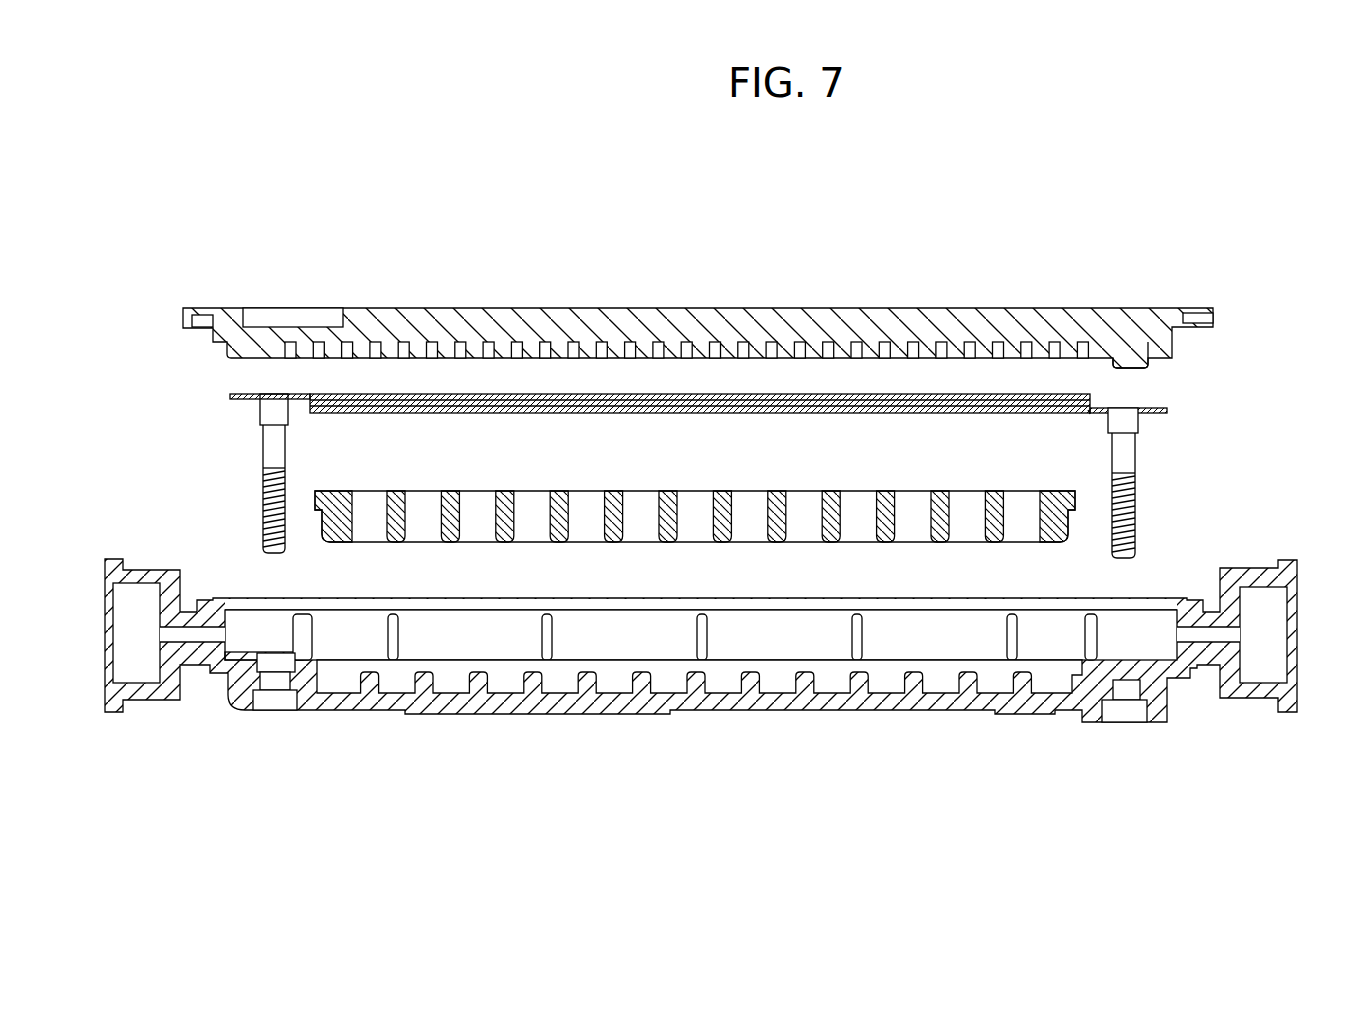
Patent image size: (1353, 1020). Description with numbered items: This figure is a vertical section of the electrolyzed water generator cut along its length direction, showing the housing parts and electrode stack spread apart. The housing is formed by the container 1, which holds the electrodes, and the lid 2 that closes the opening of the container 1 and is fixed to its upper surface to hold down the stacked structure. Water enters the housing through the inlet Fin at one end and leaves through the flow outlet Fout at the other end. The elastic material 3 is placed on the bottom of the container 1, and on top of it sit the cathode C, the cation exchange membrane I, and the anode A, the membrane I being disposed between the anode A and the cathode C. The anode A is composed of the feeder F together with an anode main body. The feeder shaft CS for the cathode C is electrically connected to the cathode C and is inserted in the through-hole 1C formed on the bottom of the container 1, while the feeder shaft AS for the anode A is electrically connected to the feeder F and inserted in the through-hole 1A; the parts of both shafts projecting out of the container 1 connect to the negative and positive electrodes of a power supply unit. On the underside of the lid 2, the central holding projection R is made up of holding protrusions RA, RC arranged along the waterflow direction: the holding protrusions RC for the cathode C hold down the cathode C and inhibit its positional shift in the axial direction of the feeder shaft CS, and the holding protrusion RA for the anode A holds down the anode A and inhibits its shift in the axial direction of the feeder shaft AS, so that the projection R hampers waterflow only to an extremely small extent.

The container 1 is at (910, 703).
The through-hole 1A is at (1130, 715).
The through-hole 1C is at (268, 673).
The lid 2 is at (379, 307).
The elastic material 3 is at (880, 491).
The holding projection R is at (458, 247).
The holding protrusion for cathode RC is at (470, 345).
The holding protrusion for anode RA is at (1125, 356).
The cathode C is at (296, 394).
The feeder shaft for cathode CS is at (262, 497).
The anode A is at (1090, 409).
The cation exchange membrane I is at (1090, 400).
The feeder F is at (1088, 416).
The feeder shaft for anode AS is at (1136, 507).
The flow outlet Fout is at (182, 663).
The inlet Fin is at (1222, 645).